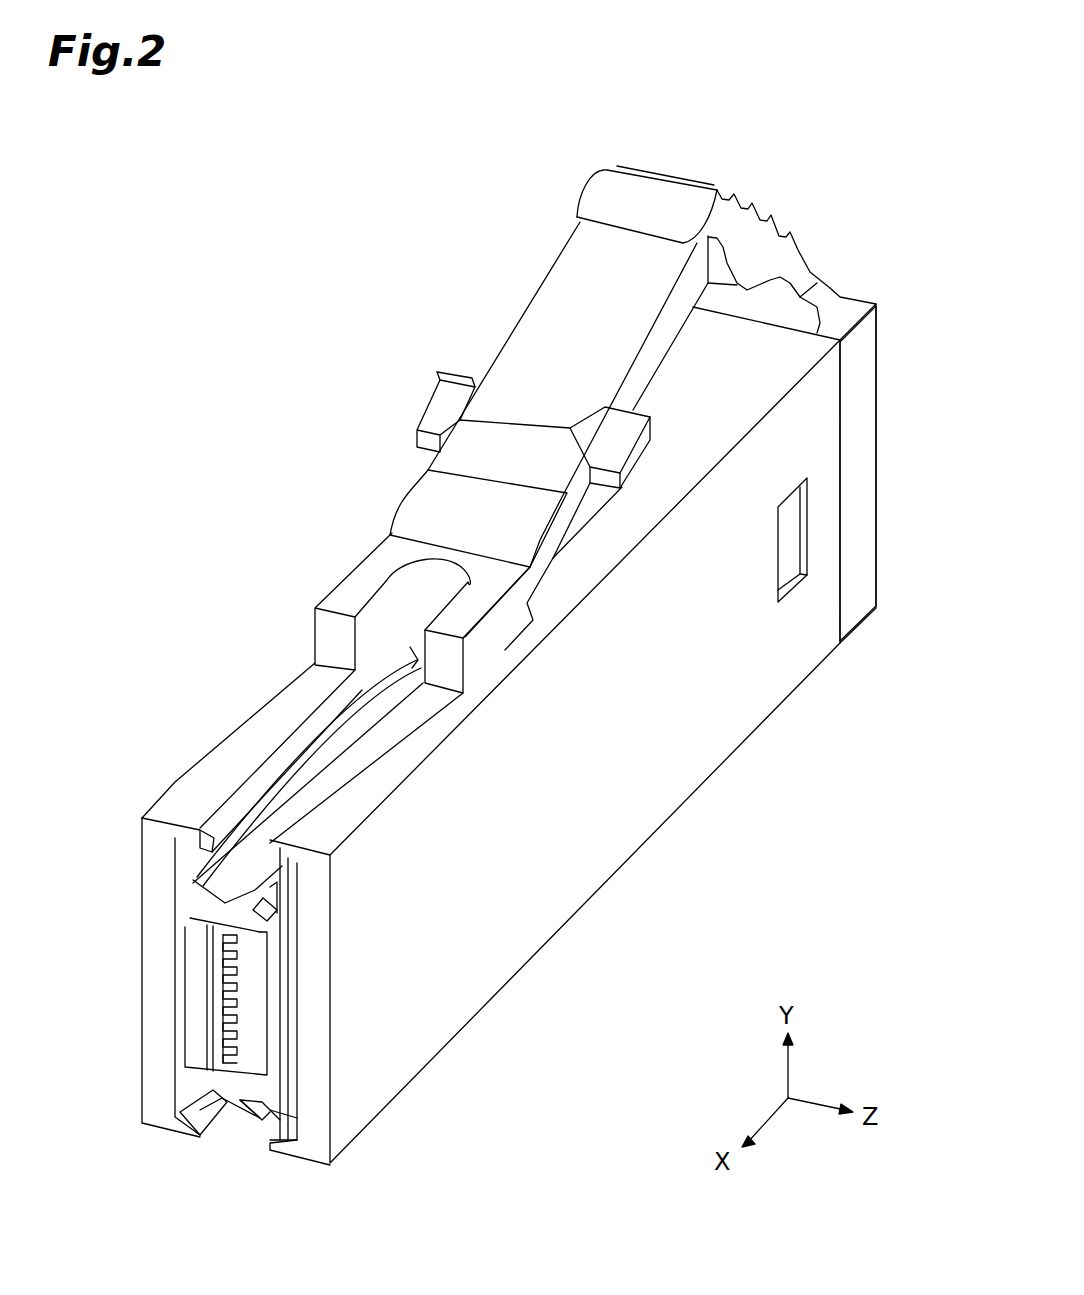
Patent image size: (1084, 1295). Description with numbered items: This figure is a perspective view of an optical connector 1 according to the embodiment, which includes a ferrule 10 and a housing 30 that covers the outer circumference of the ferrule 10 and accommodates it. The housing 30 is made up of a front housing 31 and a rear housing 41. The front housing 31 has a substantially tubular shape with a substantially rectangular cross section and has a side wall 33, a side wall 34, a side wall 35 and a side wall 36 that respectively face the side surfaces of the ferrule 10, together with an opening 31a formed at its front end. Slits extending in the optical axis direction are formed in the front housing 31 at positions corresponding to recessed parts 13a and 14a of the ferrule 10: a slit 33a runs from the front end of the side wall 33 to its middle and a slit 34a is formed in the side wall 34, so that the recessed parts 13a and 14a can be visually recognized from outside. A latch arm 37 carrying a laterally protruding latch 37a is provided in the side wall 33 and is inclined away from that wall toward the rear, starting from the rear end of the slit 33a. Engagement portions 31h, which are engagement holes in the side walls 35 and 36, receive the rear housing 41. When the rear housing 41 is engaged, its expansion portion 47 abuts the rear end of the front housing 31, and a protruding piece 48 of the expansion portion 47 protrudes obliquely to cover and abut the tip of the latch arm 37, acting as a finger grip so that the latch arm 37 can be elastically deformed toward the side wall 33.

The optical connector 1 is at (832, 166).
The ferrule 10 is at (283, 997).
The recessed part 13a is at (235, 880).
The recessed part 14a is at (195, 1138).
The housing 30 is at (300, 503).
The front housing 31 is at (282, 669).
The opening 31a is at (183, 1050).
The engagement portion 31h is at (812, 600).
The side wall 33 is at (242, 746).
The slit 33a is at (220, 828).
The side wall 34 is at (280, 1163).
The slit 34a is at (218, 1130).
The side wall 35 is at (577, 842).
The side wall 36 is at (140, 968).
The latch arm 37 is at (558, 272).
The latch 37a is at (614, 437).
The rear housing 41 is at (877, 386).
The expansion portion 47 is at (860, 468).
The protruding piece 48 is at (758, 256).